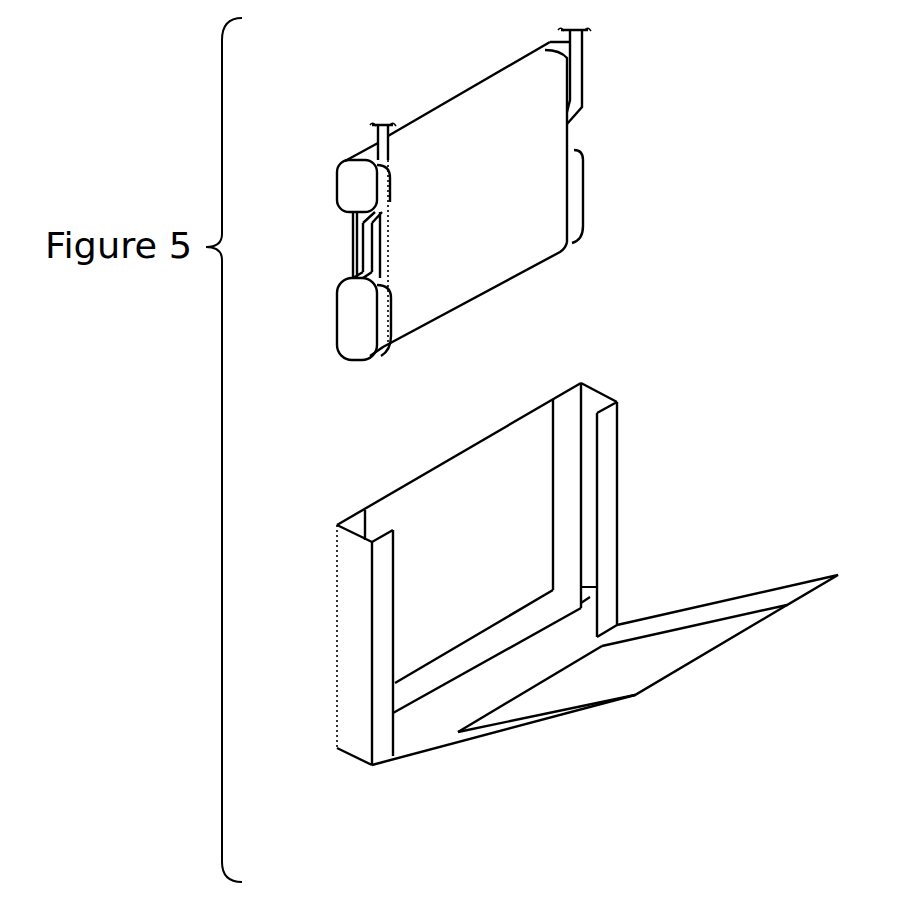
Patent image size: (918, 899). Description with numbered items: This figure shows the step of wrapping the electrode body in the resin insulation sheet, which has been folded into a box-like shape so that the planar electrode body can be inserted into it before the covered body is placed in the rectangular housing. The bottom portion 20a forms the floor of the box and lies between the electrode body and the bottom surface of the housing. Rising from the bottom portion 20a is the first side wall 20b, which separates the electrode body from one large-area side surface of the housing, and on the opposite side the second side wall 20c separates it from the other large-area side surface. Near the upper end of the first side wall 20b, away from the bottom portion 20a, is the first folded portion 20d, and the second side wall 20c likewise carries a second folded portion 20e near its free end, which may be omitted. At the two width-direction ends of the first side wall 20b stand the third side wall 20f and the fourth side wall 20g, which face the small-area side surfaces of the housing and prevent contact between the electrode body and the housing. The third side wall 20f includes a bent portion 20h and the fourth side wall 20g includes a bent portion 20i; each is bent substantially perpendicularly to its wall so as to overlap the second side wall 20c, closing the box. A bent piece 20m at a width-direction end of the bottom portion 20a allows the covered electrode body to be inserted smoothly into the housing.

The bottom portion 20a is at (432, 718).
The first side wall 20b is at (352, 520).
The second side wall 20c is at (743, 606).
The first folded portion 20d is at (497, 476).
The second folded portion 20e is at (660, 661).
The third side wall 20f is at (352, 692).
The fourth side wall 20g is at (598, 407).
The bent portion 20h is at (384, 740).
The bent portion 20i is at (610, 460).
The bent piece 20m is at (587, 602).